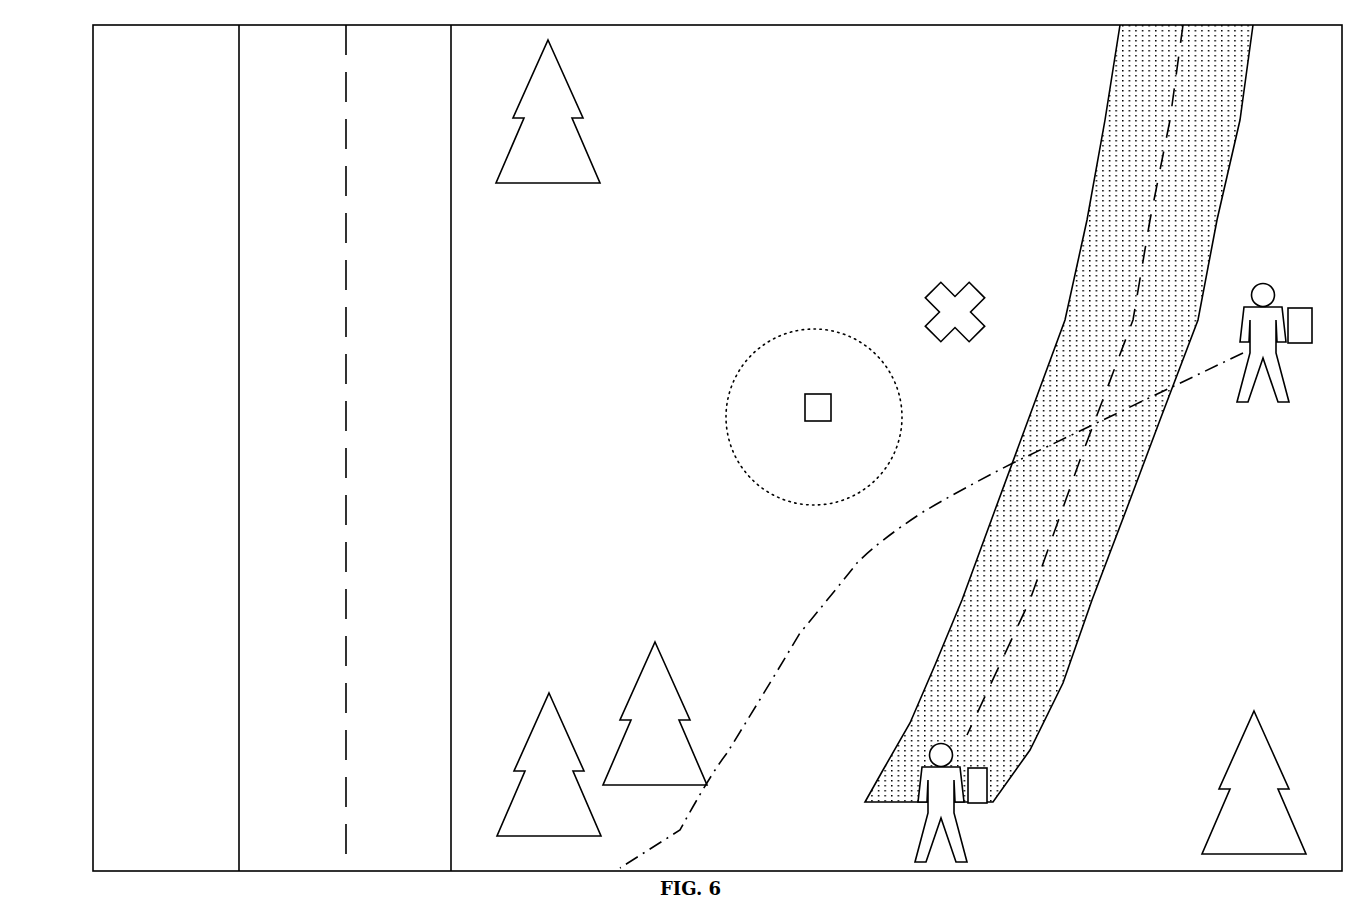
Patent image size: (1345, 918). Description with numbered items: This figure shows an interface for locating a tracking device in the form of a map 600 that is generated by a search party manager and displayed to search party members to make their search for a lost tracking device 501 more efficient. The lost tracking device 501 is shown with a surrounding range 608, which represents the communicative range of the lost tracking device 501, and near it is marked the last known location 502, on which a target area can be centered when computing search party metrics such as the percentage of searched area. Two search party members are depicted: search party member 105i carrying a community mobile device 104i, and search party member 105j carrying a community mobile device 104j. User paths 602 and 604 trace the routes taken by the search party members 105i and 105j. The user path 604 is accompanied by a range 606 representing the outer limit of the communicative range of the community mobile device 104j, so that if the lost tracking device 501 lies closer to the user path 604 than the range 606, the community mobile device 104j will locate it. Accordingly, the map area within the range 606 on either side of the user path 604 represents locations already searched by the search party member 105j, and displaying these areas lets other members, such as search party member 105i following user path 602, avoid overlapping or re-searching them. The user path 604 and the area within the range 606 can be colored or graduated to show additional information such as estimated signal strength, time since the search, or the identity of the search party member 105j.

The map 600 is at (717, 448).
The lost tracking device 501 is at (818, 440).
The last known location 502 is at (955, 332).
The user path 602 is at (931, 610).
The user path 604 is at (1085, 481).
The range 606 is at (1068, 688).
The range 608 is at (748, 354).
The community mobile device 104i is at (1309, 342).
The search party member 105i is at (1263, 358).
The community mobile device 104j is at (987, 802).
The search party member 105j is at (941, 818).